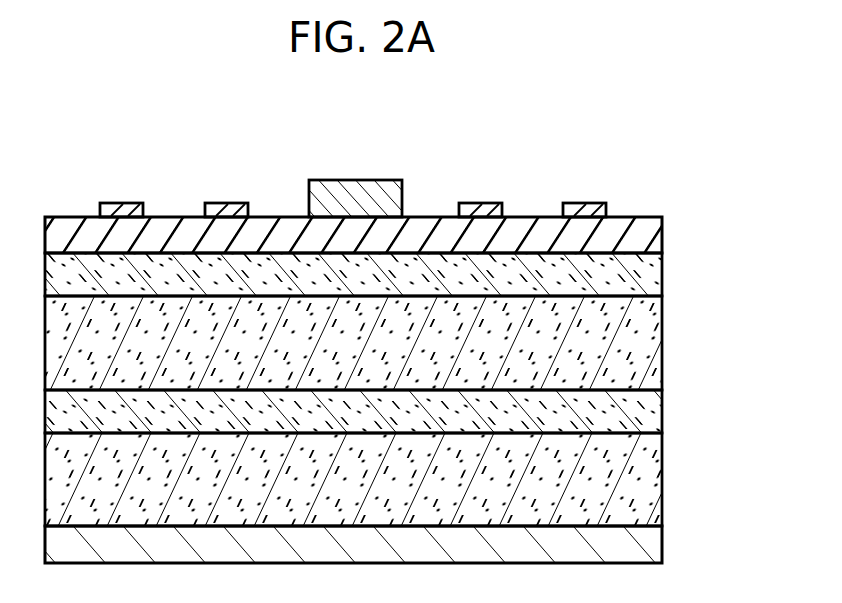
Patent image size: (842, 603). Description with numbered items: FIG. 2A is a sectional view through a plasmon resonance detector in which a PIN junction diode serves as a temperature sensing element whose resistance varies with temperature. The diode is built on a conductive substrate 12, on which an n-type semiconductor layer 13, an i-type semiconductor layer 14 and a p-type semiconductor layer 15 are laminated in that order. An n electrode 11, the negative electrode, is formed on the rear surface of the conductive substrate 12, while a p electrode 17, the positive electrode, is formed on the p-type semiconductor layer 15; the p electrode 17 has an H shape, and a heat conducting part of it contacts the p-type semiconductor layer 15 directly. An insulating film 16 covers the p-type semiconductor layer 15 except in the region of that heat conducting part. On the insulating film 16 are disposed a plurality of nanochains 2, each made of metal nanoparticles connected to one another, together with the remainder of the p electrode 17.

The nanochain 2 is at (127, 203).
The n electrode 11 is at (655, 542).
The conductive substrate 12 is at (655, 475).
The n-type semiconductor layer 13 is at (655, 412).
The i-type semiconductor layer 14 is at (655, 344).
The p-type semiconductor layer 15 is at (655, 275).
The insulating film 16 is at (655, 239).
The p electrode 17 is at (368, 180).